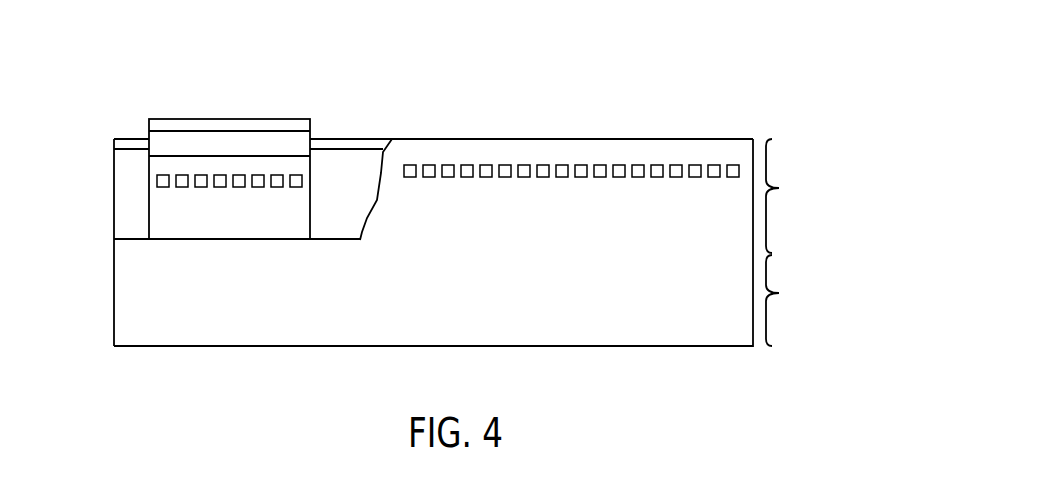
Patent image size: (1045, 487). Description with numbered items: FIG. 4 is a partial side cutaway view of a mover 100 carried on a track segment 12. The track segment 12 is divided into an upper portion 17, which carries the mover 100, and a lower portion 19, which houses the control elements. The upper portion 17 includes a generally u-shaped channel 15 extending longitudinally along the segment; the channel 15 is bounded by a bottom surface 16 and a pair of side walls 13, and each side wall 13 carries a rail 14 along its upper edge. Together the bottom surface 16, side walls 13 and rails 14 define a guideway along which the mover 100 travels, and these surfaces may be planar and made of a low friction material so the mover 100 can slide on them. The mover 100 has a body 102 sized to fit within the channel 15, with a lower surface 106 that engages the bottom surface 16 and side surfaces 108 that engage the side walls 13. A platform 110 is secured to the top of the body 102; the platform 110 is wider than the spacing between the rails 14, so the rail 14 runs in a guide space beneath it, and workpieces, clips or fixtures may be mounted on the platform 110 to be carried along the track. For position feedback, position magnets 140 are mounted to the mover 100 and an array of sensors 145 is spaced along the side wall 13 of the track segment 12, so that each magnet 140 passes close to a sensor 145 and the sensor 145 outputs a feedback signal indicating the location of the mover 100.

The track segment 12 is at (721, 112).
The side wall 13 is at (355, 191).
The rail 14 is at (363, 138).
The channel 15 is at (128, 191).
The bottom surface 16 is at (337, 250).
The upper portion 17 is at (779, 188).
The lower portion 19 is at (779, 293).
The mover 100 is at (226, 118).
The body 102 is at (238, 220).
The lower surface 106 is at (195, 243).
The side surface 108 is at (220, 227).
The platform 110 is at (172, 128).
The position magnet 140 is at (258, 188).
The sensor 145 is at (600, 178).